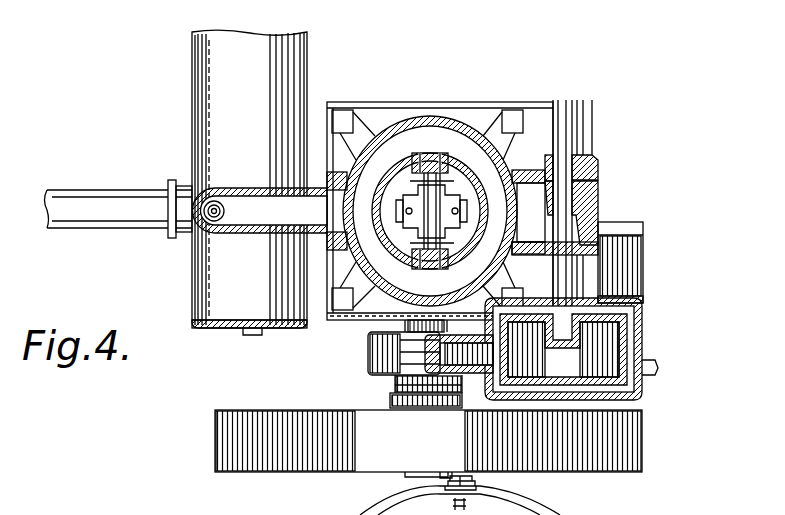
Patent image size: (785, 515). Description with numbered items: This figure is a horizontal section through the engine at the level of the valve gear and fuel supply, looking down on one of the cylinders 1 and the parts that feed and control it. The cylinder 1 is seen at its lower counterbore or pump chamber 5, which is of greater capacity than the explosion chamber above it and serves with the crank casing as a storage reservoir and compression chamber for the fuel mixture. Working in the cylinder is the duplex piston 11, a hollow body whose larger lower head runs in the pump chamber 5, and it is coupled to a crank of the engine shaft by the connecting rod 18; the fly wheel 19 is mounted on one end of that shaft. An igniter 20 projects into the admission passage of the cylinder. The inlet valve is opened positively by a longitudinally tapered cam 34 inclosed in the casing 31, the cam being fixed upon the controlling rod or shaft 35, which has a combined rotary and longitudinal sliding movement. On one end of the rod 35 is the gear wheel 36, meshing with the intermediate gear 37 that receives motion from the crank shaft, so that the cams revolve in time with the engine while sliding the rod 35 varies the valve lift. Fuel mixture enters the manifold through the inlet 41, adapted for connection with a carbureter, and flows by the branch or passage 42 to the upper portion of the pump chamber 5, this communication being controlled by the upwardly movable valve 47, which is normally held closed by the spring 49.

The cylinder 1 is at (398, 118).
The counterbore or pump chamber 5 is at (435, 211).
The duplex piston 11 is at (480, 240).
The connecting rod 18 is at (420, 208).
The fly wheel 19 is at (612, 455).
The igniter 20 is at (503, 508).
The casing 31 is at (598, 222).
The longitudinally tapered cam 34 is at (575, 200).
The controlling rod or shaft 35 is at (565, 168).
The gear wheel 36 is at (617, 340).
The intermediate gear 37 is at (437, 348).
The inlet 41 is at (70, 205).
The branch or passage 42 is at (252, 203).
The upwardly movable valve 47 is at (217, 215).
The spring 49 is at (193, 235).